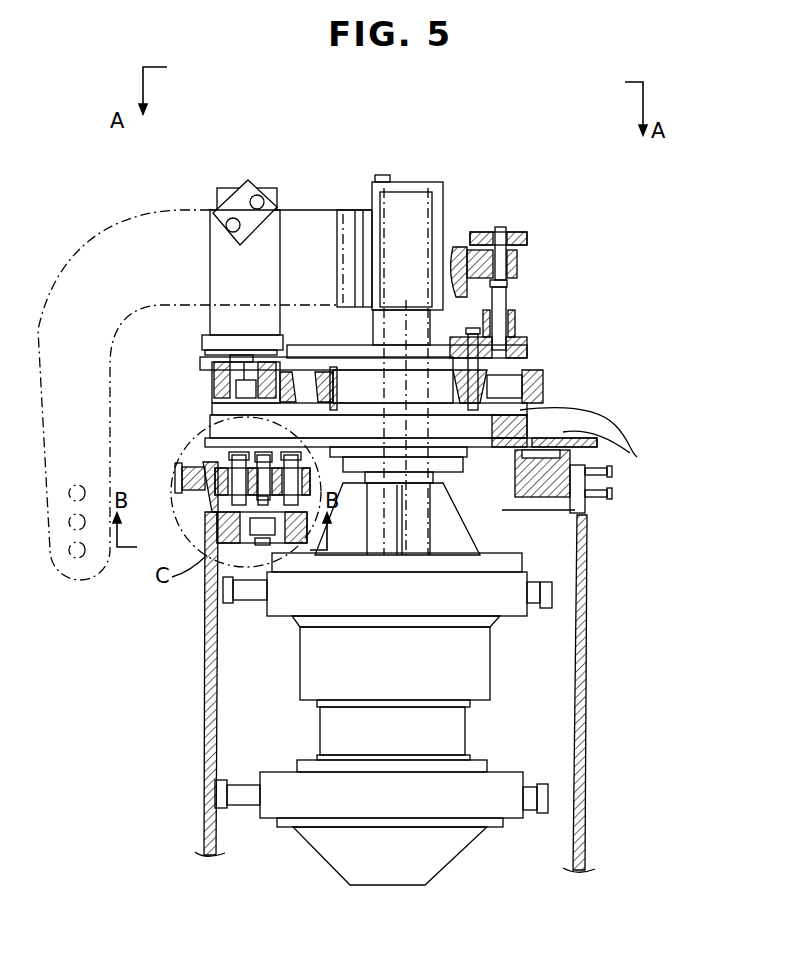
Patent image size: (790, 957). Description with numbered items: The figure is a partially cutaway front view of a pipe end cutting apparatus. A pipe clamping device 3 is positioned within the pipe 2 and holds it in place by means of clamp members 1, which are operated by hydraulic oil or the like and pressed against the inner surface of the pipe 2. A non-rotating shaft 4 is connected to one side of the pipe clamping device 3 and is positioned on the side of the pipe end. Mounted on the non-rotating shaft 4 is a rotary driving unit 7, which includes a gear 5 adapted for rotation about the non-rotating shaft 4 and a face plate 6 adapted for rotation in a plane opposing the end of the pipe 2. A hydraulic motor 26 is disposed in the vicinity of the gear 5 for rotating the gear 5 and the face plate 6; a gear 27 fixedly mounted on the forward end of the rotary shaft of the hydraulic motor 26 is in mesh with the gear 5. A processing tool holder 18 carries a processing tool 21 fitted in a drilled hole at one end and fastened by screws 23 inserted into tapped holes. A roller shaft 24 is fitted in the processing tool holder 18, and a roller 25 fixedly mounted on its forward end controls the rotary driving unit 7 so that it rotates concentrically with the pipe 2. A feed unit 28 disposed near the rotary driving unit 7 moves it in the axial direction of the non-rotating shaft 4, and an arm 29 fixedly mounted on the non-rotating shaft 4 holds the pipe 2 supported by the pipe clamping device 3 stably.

The clamp members 1 is at (237, 793).
The pipe 2 is at (208, 717).
The pipe clamping device 3 is at (305, 667).
The non-rotating shaft 4 is at (357, 322).
The gear 5 is at (215, 407).
The face plate 6 is at (205, 443).
The rotary driving unit 7 is at (563, 432).
The processing tool holder 18 is at (178, 467).
The processing tool 21 is at (177, 498).
The screws 23 is at (180, 467).
The roller shaft 24 is at (212, 553).
The roller 25 is at (215, 518).
The hydraulic motor 26 is at (217, 188).
The gear 27 is at (212, 378).
The feed unit 28 is at (517, 262).
The arm 29 is at (106, 224).